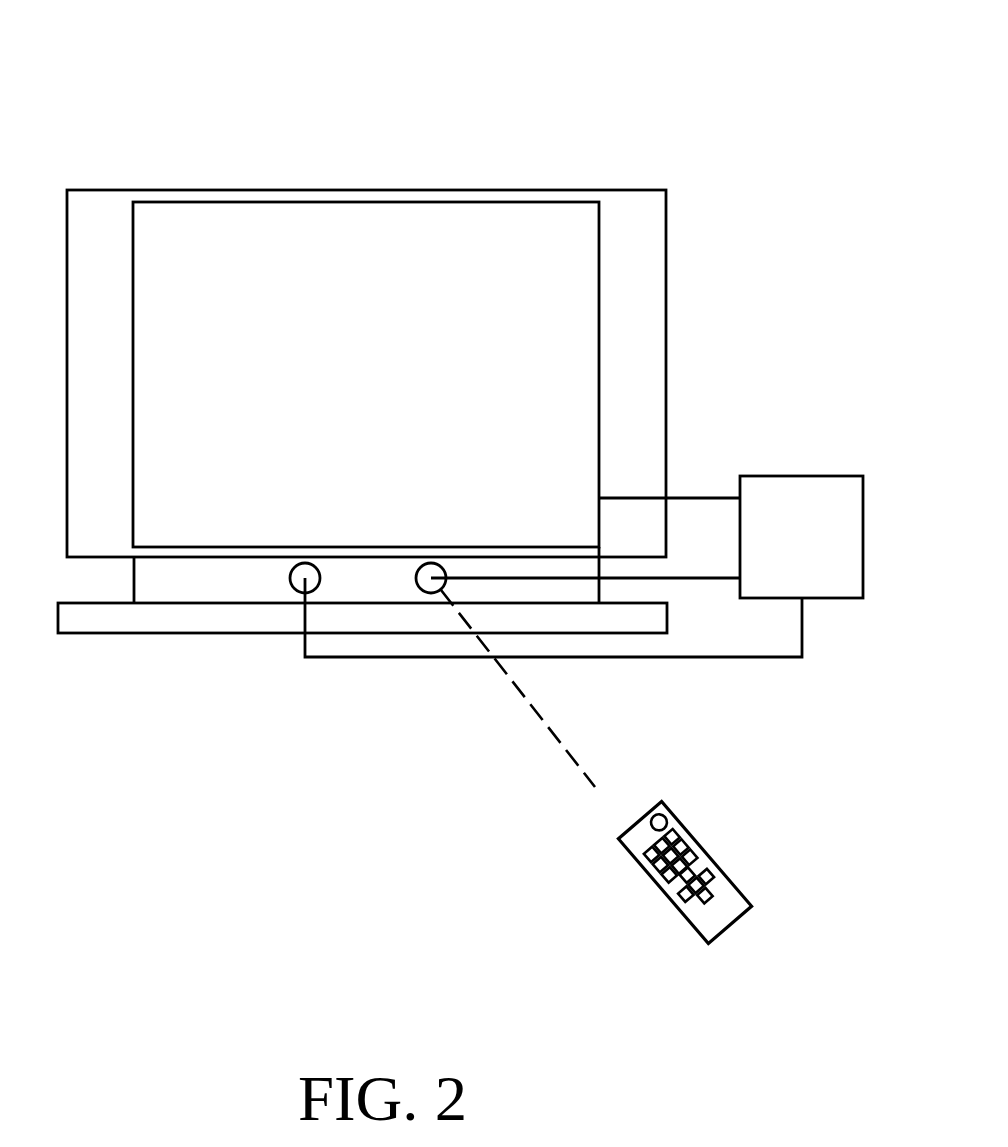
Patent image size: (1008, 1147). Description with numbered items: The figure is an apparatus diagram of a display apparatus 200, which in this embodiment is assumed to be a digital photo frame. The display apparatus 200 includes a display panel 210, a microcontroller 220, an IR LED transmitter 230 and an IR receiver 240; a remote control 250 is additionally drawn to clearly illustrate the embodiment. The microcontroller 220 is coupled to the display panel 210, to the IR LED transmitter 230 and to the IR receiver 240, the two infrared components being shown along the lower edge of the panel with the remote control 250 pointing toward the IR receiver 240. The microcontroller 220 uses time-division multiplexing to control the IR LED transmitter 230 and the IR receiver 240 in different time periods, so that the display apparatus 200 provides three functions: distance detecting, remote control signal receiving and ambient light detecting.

The display apparatus 200 is at (549, 114).
The display panel 210 is at (667, 392).
The microcontroller 220 is at (834, 562).
The IR LED transmitter 230 is at (297, 592).
The IR receiver 240 is at (426, 592).
The remote control 250 is at (713, 852).